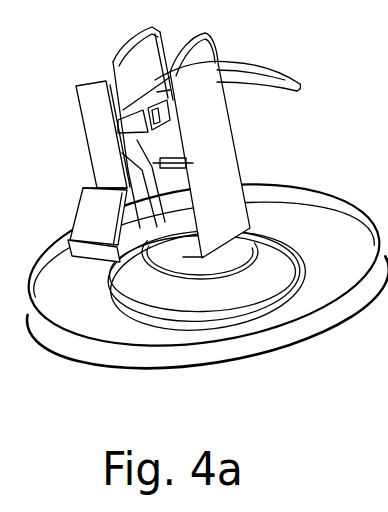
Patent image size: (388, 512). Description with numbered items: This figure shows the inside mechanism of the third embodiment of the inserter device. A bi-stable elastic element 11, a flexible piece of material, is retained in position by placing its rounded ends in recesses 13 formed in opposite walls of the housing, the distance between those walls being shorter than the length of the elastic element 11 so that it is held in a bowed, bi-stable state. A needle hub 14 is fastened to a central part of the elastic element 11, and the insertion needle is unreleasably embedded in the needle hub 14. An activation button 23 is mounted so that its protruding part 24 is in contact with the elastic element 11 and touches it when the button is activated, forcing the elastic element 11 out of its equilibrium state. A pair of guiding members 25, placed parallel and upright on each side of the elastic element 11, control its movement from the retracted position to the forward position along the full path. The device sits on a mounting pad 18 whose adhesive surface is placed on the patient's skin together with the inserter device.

The bi-stable elastic element 11 is at (277, 70).
The recesses 13 is at (78, 248).
The needle hub 14 is at (174, 150).
The mounting pad 18 is at (284, 340).
The activation button 23 is at (97, 122).
The protruding part 24 is at (127, 138).
The guiding members 25 is at (115, 52).